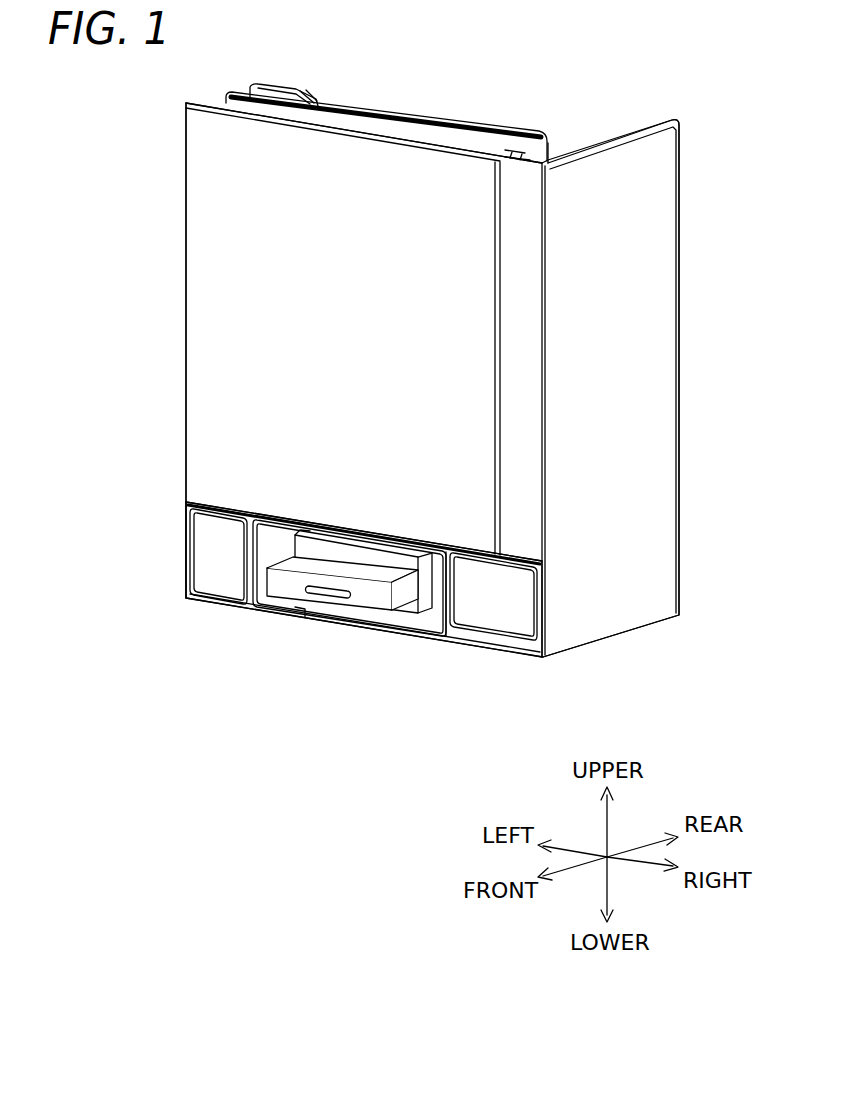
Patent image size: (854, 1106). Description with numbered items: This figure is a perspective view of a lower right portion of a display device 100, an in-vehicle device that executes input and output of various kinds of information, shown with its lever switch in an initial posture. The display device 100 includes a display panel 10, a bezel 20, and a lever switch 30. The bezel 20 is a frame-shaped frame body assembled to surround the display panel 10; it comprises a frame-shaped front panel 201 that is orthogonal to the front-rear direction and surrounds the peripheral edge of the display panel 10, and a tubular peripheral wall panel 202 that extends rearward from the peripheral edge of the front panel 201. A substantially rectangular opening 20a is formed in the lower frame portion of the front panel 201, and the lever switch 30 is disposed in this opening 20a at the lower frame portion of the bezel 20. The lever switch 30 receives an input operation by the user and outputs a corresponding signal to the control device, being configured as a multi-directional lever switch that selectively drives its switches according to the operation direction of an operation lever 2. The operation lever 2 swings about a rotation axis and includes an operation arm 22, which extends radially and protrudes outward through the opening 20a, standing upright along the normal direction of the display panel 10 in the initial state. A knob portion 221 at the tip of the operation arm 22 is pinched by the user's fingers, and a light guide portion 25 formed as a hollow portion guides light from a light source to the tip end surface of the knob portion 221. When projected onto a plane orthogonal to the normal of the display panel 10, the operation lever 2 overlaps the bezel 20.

The display device 100 is at (146, 159).
The display panel 10 is at (212, 314).
The bezel 20 is at (196, 528).
The opening 20a is at (478, 632).
The front panel 201 is at (193, 572).
The peripheral wall panel 202 is at (613, 616).
The lever switch 30 is at (262, 553).
The operation lever 2 is at (351, 633).
The operation arm 22 is at (430, 590).
The knob portion 221 is at (338, 646).
The light guide portion 25 is at (255, 573).